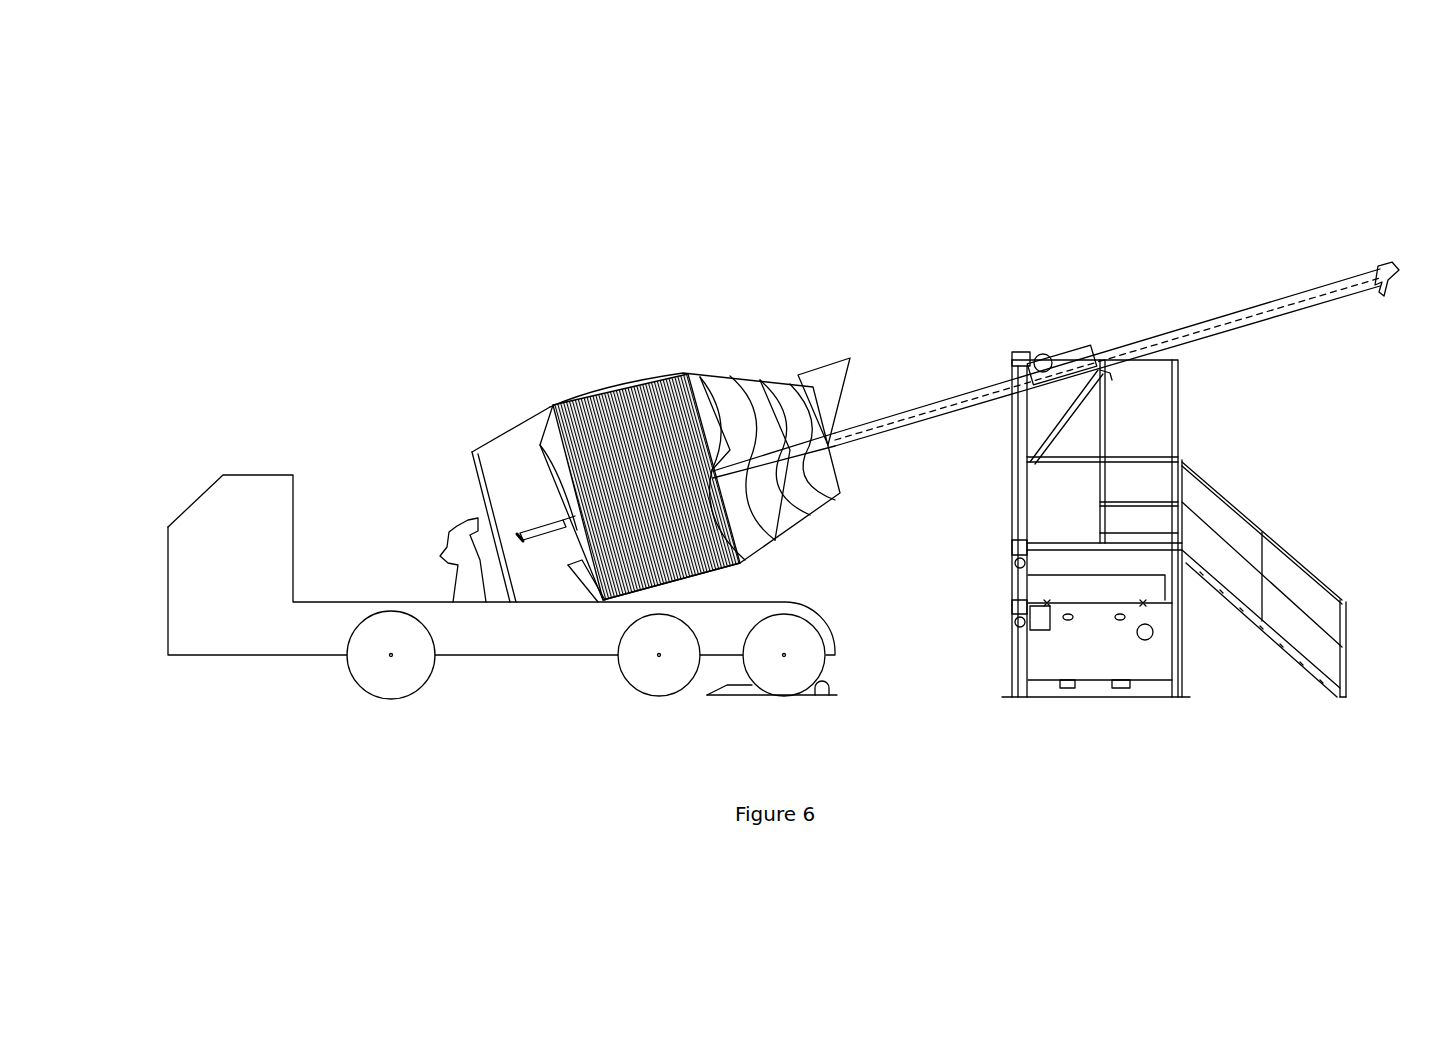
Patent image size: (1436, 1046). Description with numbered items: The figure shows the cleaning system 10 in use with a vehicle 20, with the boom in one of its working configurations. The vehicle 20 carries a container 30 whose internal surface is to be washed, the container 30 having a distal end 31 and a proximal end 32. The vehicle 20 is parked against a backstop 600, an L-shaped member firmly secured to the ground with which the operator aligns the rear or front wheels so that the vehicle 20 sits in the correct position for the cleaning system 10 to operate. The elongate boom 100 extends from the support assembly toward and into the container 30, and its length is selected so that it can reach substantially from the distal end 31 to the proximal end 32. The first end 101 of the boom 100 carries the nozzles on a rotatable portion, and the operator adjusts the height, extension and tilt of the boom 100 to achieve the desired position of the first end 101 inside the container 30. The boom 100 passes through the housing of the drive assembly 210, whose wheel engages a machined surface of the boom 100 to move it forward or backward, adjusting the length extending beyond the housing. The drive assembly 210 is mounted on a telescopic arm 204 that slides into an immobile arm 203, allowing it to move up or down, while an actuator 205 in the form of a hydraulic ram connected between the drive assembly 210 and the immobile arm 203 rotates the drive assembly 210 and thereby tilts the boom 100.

The cleaning system 10 is at (1313, 227).
The vehicle 20 is at (242, 525).
The container 30 is at (593, 397).
The distal end 31 is at (462, 436).
The proximal end 32 is at (778, 363).
The boom 100 is at (1200, 327).
The first end 101 is at (518, 519).
The immobile arm 203 is at (1022, 642).
The telescopic arm 204 is at (1023, 488).
The actuator 205 is at (1055, 429).
The drive assembly 210 is at (1007, 397).
The backstop 600 is at (735, 692).